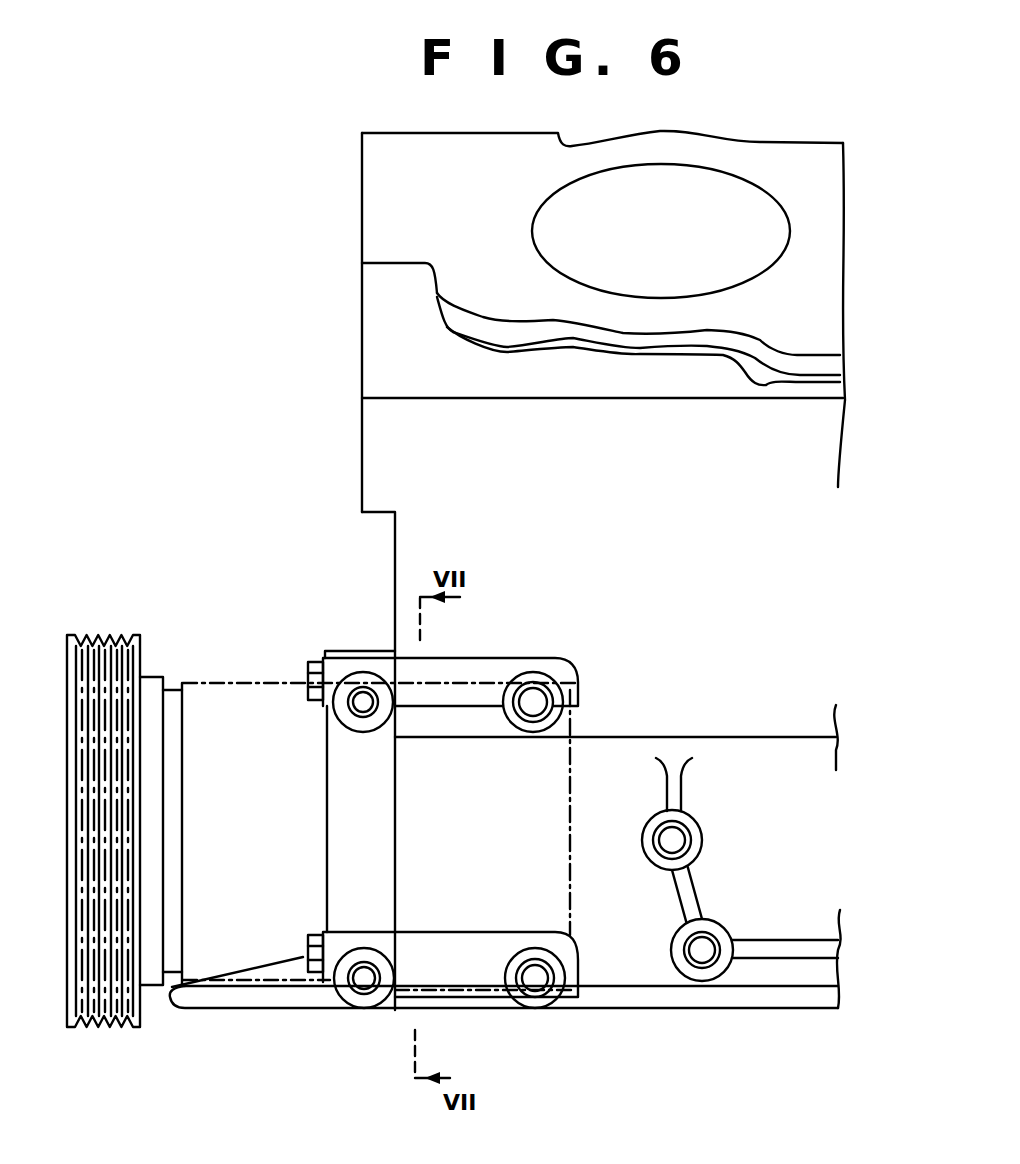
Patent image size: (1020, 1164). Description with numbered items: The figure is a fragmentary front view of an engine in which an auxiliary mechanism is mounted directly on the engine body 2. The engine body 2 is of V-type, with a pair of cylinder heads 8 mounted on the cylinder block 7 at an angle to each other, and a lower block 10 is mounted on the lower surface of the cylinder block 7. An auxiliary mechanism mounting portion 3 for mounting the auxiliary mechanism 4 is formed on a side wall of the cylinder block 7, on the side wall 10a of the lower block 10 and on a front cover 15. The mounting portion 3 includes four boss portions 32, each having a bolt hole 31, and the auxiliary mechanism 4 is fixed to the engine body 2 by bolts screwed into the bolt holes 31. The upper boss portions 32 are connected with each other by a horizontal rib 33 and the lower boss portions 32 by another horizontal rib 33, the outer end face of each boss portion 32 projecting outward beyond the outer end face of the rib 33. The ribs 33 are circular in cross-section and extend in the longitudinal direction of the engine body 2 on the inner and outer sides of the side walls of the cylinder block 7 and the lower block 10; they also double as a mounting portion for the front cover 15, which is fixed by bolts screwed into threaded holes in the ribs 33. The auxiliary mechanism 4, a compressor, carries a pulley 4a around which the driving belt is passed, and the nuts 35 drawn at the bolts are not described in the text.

The engine body 2 is at (346, 365).
The cylinder head 8 is at (381, 300).
The cylinder block 7 is at (417, 523).
The auxiliary mechanism mounting portion 3 is at (587, 658).
The horizontal rib 33 is at (472, 657).
The bolt hole 31 is at (363, 700).
The boss portion 32 is at (335, 705).
The nut 35 is at (310, 683).
The front cover 15 is at (340, 777).
The side wall of the lower block 10a is at (422, 832).
The lower block 10 is at (665, 973).
The auxiliary mechanism 4 is at (212, 664).
The pulley 4a is at (68, 822).